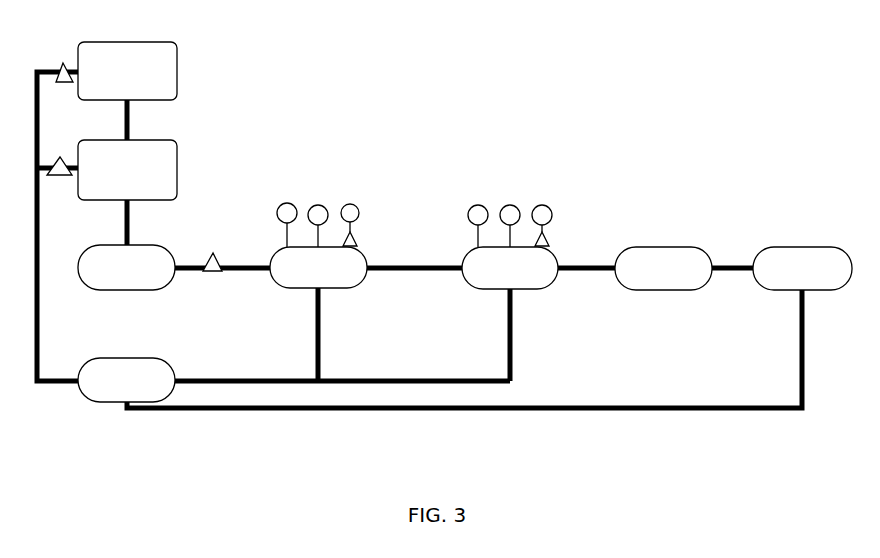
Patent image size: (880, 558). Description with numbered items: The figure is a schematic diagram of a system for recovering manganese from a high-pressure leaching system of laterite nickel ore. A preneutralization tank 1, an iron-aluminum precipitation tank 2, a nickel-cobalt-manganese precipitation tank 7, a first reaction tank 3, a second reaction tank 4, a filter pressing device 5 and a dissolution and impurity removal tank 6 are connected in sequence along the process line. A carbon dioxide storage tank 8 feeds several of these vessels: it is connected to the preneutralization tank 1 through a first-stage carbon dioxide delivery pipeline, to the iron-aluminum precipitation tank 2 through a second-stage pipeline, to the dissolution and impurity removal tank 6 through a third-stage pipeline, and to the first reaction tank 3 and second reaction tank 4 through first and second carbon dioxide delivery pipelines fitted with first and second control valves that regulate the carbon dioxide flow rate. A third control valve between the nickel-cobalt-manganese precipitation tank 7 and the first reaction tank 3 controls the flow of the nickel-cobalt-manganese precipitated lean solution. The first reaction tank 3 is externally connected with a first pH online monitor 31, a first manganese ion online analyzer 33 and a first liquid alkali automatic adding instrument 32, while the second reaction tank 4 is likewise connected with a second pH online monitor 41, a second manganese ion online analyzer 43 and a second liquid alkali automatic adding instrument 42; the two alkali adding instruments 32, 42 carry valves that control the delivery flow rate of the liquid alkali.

The preneutralization tank 1 is at (177, 52).
The iron-aluminum precipitation tank 2 is at (177, 145).
The first reaction tank 3 is at (352, 287).
The first pH online monitor 31 is at (315, 205).
The first liquid alkali automatic adding instrument 32 is at (350, 203).
The first 3S-CL-Mn manganese ion online analyzer 33 is at (282, 203).
The second reaction tank 4 is at (550, 287).
The second pH online monitor 41 is at (505, 205).
The second liquid alkali automatic adding instrument 42 is at (540, 204).
The second 3S-CL-Mn manganese ion online analyzer 43 is at (472, 204).
The filter pressing device 5 is at (662, 245).
The dissolution and impurity removal tank 6 is at (803, 245).
The nickel-cobalt-manganese precipitation tank 7 is at (130, 292).
The carbon dioxide storage tank 8 is at (92, 402).